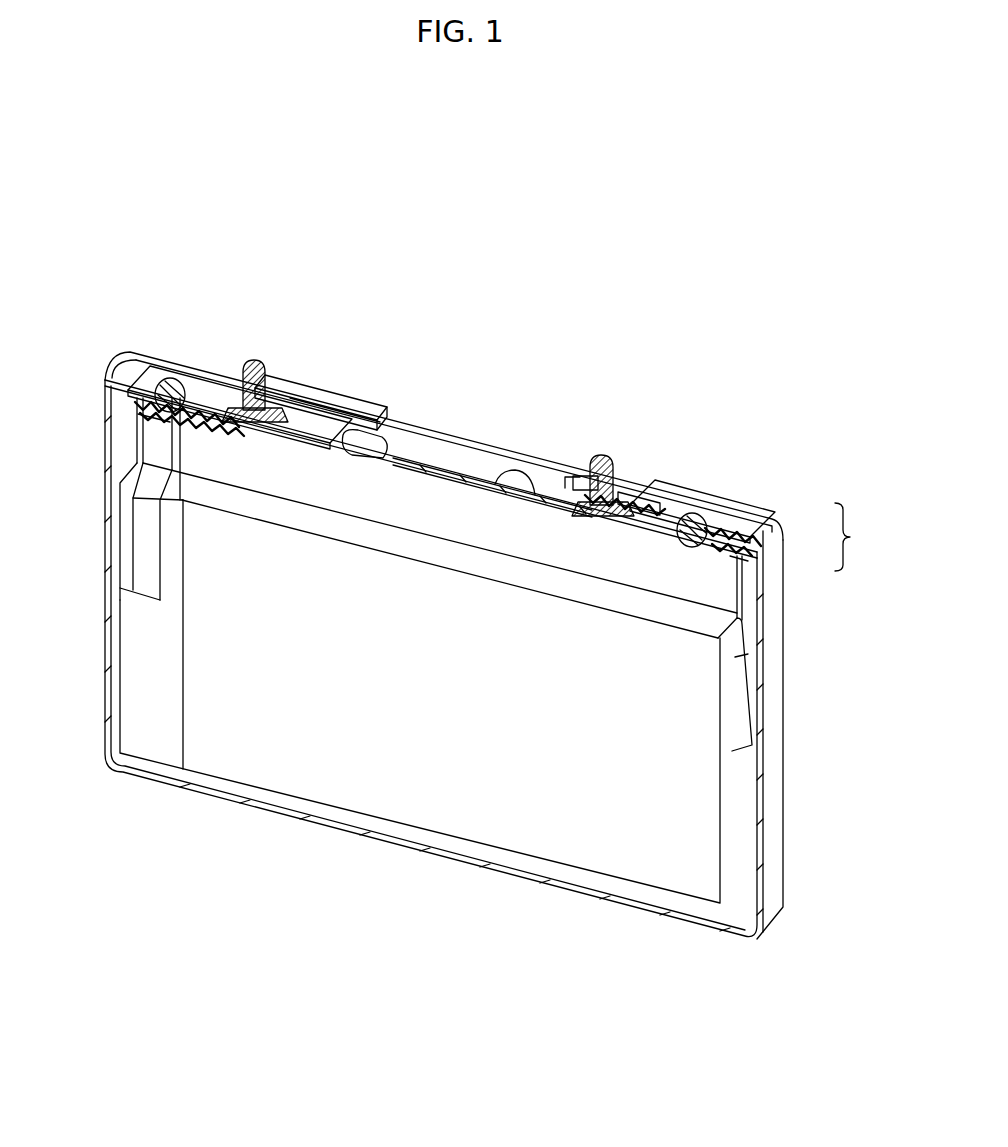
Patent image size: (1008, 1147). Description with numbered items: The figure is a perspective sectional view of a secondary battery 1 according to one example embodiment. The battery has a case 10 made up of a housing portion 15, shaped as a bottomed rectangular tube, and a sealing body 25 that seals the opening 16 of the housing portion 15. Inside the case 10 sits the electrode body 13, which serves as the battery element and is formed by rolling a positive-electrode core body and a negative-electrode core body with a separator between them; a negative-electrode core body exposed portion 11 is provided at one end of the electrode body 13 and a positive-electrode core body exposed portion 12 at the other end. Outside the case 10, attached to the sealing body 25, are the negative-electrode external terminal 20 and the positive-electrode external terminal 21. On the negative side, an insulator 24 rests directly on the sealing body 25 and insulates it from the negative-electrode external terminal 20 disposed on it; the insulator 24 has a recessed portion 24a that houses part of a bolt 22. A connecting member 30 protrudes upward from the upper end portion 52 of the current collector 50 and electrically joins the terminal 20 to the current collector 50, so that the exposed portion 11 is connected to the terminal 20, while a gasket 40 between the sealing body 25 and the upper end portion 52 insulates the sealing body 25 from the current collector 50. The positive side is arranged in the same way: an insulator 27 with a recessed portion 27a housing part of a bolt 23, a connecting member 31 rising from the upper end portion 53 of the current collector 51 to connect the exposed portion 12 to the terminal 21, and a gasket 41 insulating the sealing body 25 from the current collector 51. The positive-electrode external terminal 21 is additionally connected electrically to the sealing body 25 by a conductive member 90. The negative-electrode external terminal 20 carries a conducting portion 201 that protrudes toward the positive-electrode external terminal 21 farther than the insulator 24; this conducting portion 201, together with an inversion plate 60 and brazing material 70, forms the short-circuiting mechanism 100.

The secondary battery 1 is at (807, 364).
The case 10 is at (858, 537).
The negative-electrode core body exposed portion 11 is at (158, 717).
The positive-electrode core body exposed portion 12 is at (745, 870).
The electrode body 13 is at (420, 785).
The housing portion 15 is at (772, 552).
The opening 16 is at (108, 376).
The negative-electrode external terminal 20 is at (298, 385).
The conducting portion 201 is at (368, 412).
The positive-electrode external terminal 21 is at (677, 503).
The bolt 22 is at (255, 382).
The bolt 23 is at (603, 452).
The insulator 24 is at (134, 395).
The recessed portion 24a is at (242, 377).
The sealing body 25 is at (297, 433).
The insulator 27 is at (645, 492).
The recessed portion 27a is at (610, 465).
The connecting member 30 is at (176, 408).
The connecting member 31 is at (700, 513).
The gasket 40 is at (172, 398).
The gasket 41 is at (724, 523).
The current collector 50 is at (142, 538).
The current collector 51 is at (745, 710).
The upper end portion 52 is at (152, 413).
The upper end portion 53 is at (740, 562).
The inversion plate 60 is at (405, 458).
The brazing material 70 is at (372, 447).
The conductive member 90 is at (572, 468).
The short-circuiting mechanism 100 is at (402, 391).